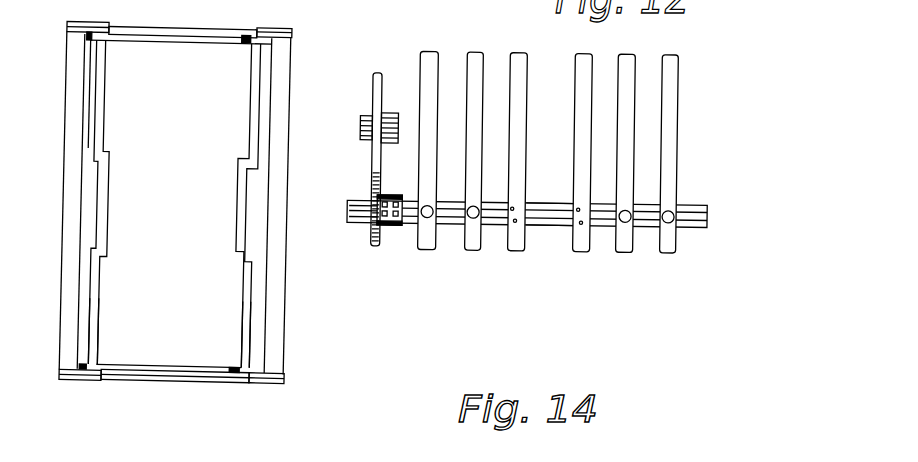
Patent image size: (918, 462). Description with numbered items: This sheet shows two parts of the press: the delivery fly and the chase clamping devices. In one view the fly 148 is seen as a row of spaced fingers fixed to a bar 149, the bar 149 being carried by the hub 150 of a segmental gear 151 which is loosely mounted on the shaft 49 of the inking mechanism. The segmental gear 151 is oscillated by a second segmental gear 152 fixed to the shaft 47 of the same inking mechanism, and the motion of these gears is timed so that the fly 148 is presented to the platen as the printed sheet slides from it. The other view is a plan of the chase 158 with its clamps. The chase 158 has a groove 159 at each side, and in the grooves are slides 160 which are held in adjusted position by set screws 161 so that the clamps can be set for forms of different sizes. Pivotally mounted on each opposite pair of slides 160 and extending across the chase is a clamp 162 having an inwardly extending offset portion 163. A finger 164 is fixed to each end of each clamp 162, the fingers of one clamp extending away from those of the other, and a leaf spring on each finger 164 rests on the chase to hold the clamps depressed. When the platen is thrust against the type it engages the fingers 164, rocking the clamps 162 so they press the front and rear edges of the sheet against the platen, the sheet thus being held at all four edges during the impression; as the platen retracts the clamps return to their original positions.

In FIG. 12, the shaft 47 is at (367, 118).
In FIG. 12, the shaft 49 is at (365, 216).
In FIG. 12, the fly 148 is at (630, 126).
In FIG. 12, the bar 149 is at (550, 217).
In FIG. 12, the hub 150 is at (385, 196).
In FIG. 12, the segmental gear 151 is at (372, 238).
In FIG. 12, the segmental gear 152 is at (372, 158).
In FIG. 14, the chase 158 is at (283, 342).
In FIG. 14, the groove 159 is at (187, 28).
In FIG. 14, the slide 160 is at (120, 18).
In FIG. 14, the set screw 161 is at (246, 30).
In FIG. 14, the clamp 162 is at (252, 293).
In FIG. 14, the offset portion 163 is at (236, 198).
In FIG. 14, the finger 164 is at (85, 4).